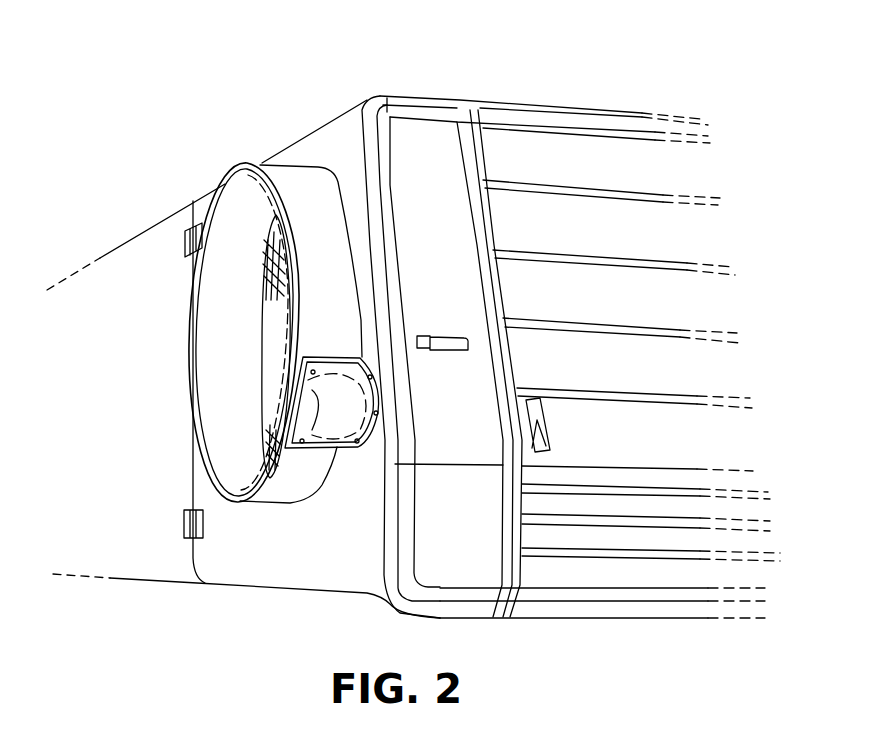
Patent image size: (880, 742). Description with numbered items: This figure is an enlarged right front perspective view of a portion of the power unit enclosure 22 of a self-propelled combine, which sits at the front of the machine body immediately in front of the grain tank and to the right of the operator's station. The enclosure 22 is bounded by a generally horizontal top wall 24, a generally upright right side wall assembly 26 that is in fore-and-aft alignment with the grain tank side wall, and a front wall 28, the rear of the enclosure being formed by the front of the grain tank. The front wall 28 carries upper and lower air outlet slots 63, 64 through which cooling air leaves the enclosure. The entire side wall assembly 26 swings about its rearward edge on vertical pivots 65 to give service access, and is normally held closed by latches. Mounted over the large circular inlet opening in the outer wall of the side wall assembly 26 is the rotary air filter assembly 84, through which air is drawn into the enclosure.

The power unit enclosure 22 is at (570, 70).
The top wall 24 is at (604, 110).
The side wall assembly 26 is at (284, 140).
The front wall 28 is at (663, 304).
The upper air outlet slots 63 is at (622, 130).
The lower air outlet slots 64 is at (702, 554).
The vertical pivots 65 is at (184, 243).
The rotary air filter assembly 84 is at (265, 516).